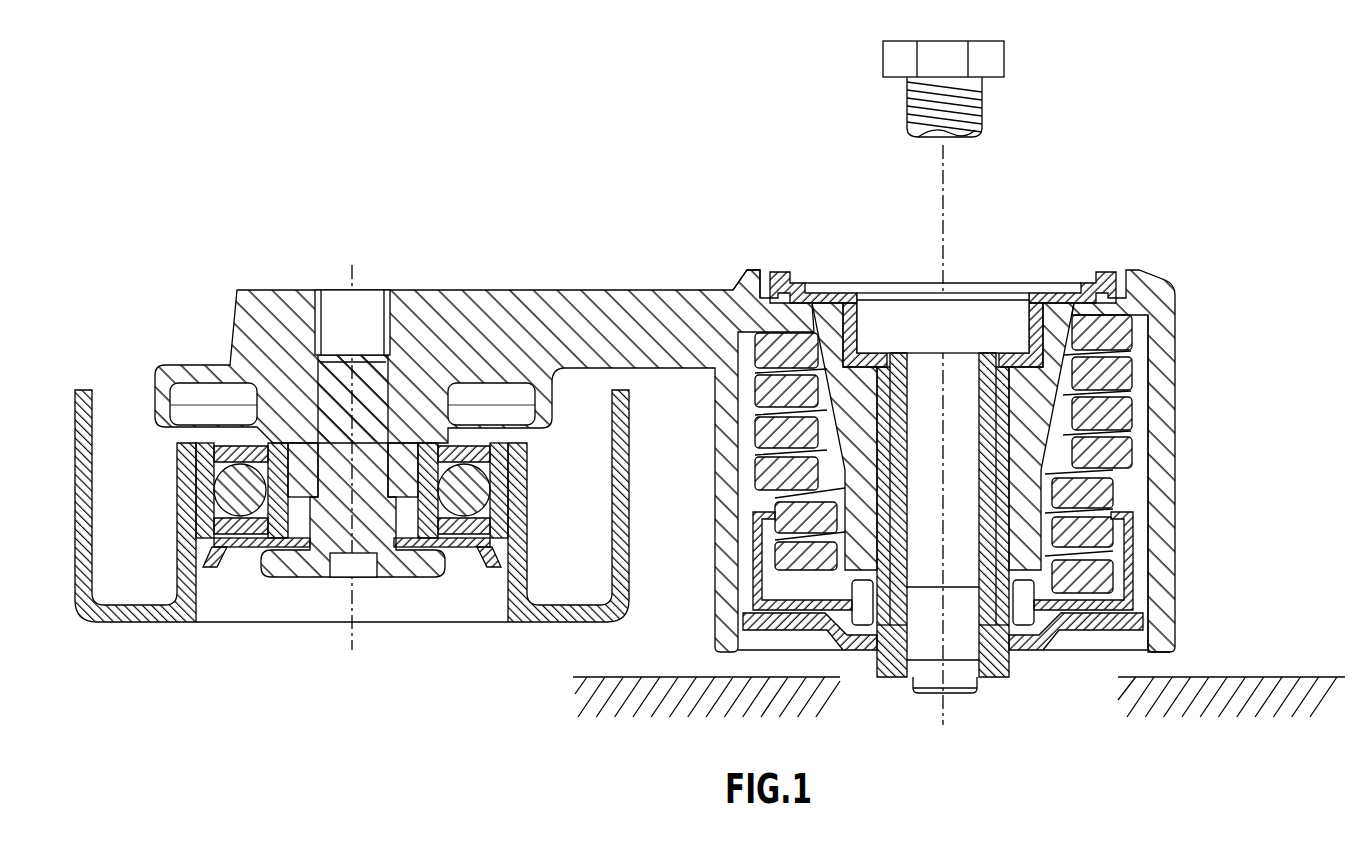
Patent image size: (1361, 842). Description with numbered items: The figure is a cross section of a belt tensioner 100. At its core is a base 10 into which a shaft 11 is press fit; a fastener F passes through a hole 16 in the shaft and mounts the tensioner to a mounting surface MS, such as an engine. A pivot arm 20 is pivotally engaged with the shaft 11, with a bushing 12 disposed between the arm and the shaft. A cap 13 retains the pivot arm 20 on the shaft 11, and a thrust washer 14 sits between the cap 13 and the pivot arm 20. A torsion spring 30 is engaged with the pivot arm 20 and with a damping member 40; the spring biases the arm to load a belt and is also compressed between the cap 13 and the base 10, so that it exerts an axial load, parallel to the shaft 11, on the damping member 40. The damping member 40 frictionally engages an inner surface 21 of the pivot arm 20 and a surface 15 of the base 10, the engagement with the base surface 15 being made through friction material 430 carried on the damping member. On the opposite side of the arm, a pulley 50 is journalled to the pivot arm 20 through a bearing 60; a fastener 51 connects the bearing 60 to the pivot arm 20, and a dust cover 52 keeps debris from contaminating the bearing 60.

The tensioner 100 is at (1212, 233).
The base 10 is at (993, 670).
The shaft 11 is at (893, 635).
The bushing 12 is at (1003, 640).
The cap 13 is at (790, 268).
The thrust washer 14 is at (1052, 298).
The surface of base 15 is at (1128, 618).
The hole 16 is at (967, 250).
The pivot arm 20 is at (1178, 402).
The inner surface 21 is at (1140, 480).
The torsion spring 30 is at (1133, 320).
The damping member 40 is at (1133, 560).
The friction material 430 is at (1140, 650).
The pulley 50 is at (117, 622).
The fastener 51 is at (390, 578).
The dust cover 52 is at (217, 568).
The bearing 60 is at (227, 492).
The fastener F is at (1005, 60).
The mounting surface MS is at (959, 714).